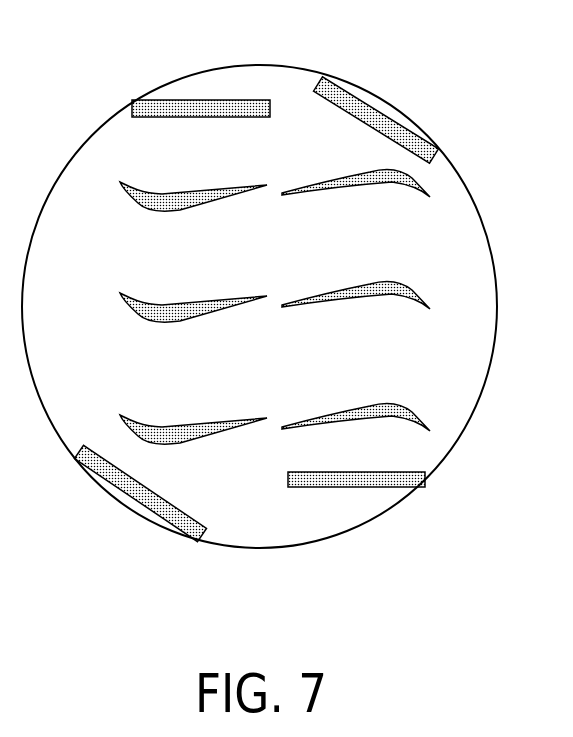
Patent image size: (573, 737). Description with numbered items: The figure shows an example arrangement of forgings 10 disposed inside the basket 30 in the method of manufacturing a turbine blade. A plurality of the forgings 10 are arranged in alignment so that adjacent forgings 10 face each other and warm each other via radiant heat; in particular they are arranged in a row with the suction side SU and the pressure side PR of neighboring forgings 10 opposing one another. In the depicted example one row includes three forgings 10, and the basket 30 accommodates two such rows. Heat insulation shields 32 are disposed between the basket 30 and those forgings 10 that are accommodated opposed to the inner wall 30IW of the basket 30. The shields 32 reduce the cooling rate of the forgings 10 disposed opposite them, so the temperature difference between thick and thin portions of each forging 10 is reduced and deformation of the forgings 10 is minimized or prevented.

The forging 10 is at (313, 197).
The basket 30 is at (457, 173).
The inner wall of the basket 30IW is at (53, 213).
The heat insulation shield 32 is at (263, 100).
The pressure side PR is at (188, 181).
The suction side SU is at (160, 222).